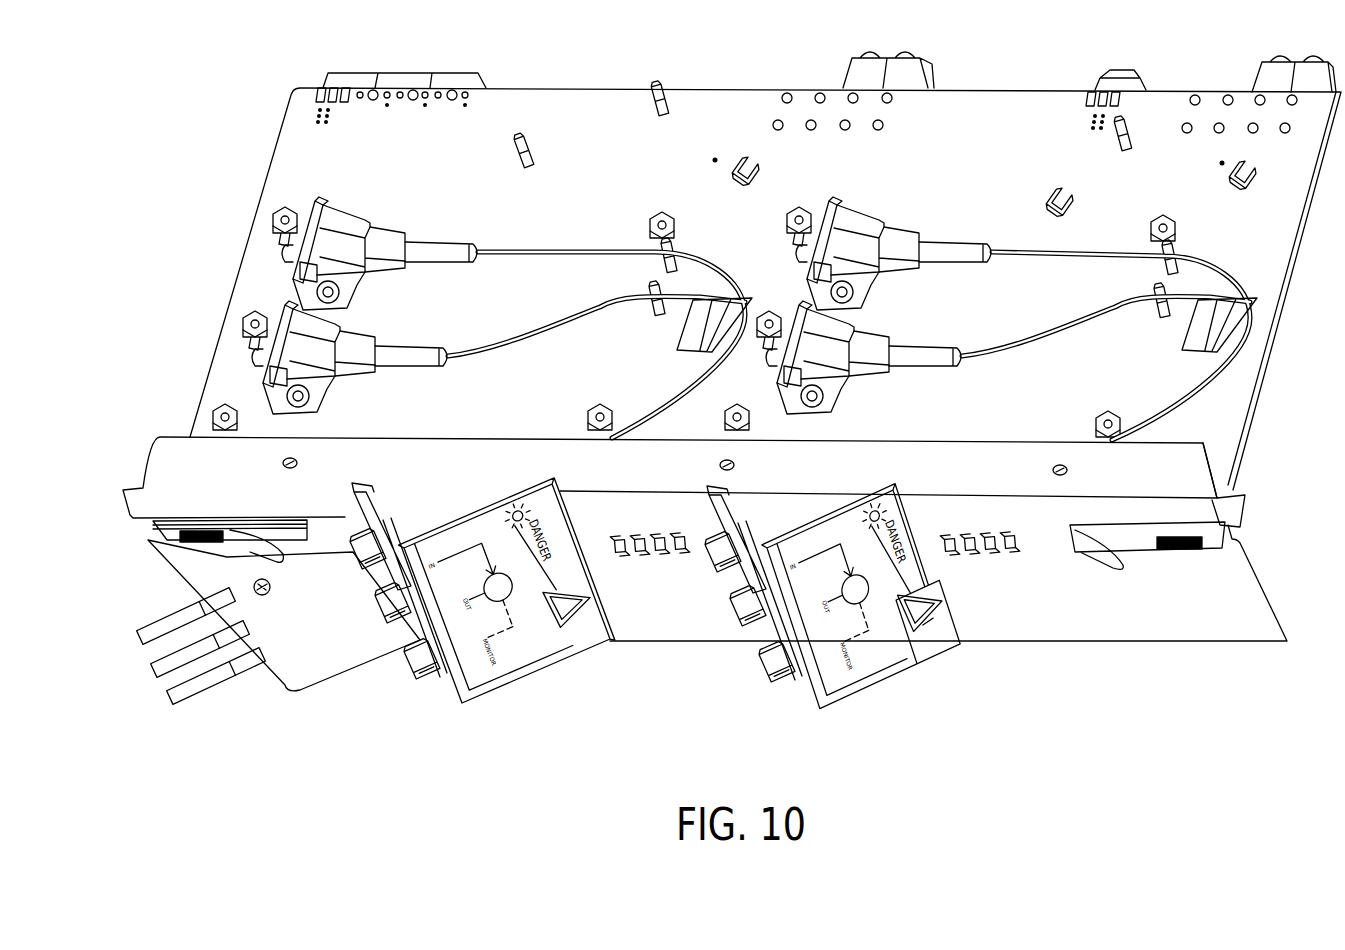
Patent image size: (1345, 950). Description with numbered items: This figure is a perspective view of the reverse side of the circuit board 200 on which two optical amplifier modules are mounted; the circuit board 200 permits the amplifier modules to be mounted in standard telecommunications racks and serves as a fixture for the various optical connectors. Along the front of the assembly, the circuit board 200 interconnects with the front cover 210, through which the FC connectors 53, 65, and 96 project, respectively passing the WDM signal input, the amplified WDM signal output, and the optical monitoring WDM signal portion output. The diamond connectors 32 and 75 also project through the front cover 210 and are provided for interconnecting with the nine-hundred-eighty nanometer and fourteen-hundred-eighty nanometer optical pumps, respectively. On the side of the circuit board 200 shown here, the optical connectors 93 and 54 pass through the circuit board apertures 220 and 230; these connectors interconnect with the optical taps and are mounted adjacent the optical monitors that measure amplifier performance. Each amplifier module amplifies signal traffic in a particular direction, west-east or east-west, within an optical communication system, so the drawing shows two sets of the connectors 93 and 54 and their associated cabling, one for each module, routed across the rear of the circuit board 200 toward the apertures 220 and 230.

The circuit board 200 is at (596, 112).
The optical connector 93 is at (386, 242).
The optical connector 54 is at (354, 343).
The circuit board aperture 220 is at (747, 298).
The circuit board aperture 230 is at (1246, 300).
The front cover 210 is at (1092, 627).
The diamond connector 32 is at (217, 598).
The diamond connector 75 is at (237, 632).
The FC connector 53 is at (373, 550).
The FC connector 65 is at (387, 610).
The FC connector 96 is at (418, 672).